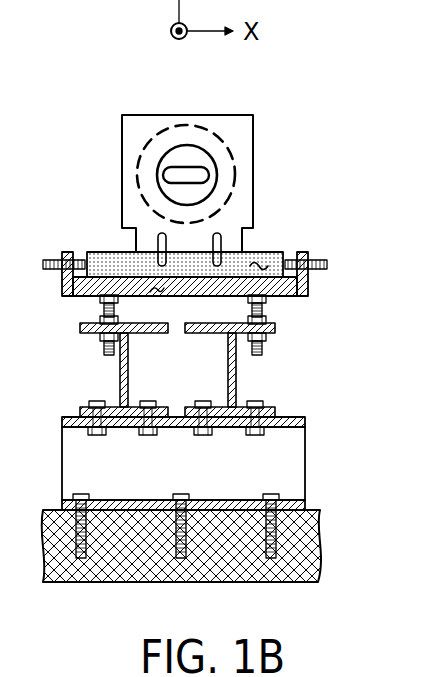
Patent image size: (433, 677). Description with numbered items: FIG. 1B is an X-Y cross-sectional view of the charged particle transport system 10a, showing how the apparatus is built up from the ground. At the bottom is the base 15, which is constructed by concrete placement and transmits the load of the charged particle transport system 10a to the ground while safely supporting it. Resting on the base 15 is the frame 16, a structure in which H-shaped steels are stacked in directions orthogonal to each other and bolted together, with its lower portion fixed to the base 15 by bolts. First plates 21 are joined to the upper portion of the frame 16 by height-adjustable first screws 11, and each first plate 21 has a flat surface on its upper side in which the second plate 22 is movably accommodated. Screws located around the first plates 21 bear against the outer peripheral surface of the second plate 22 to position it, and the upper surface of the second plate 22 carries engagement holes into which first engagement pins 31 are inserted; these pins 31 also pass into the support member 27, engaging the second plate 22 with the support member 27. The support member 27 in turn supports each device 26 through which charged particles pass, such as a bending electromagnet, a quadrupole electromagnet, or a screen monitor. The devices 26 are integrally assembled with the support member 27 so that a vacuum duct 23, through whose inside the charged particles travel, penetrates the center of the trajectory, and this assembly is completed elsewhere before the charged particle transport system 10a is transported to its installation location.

The charged particle transport system 10a is at (91, 103).
The first screw 11 is at (262, 350).
The base 15 is at (62, 508).
The frame 16 is at (118, 380).
The first plate 21 is at (151, 290).
The second plate 22 is at (263, 250).
The vacuum duct 23 is at (207, 153).
The device 26 is at (172, 124).
The support member 27 is at (122, 158).
The first engagement pin 31 is at (142, 243).